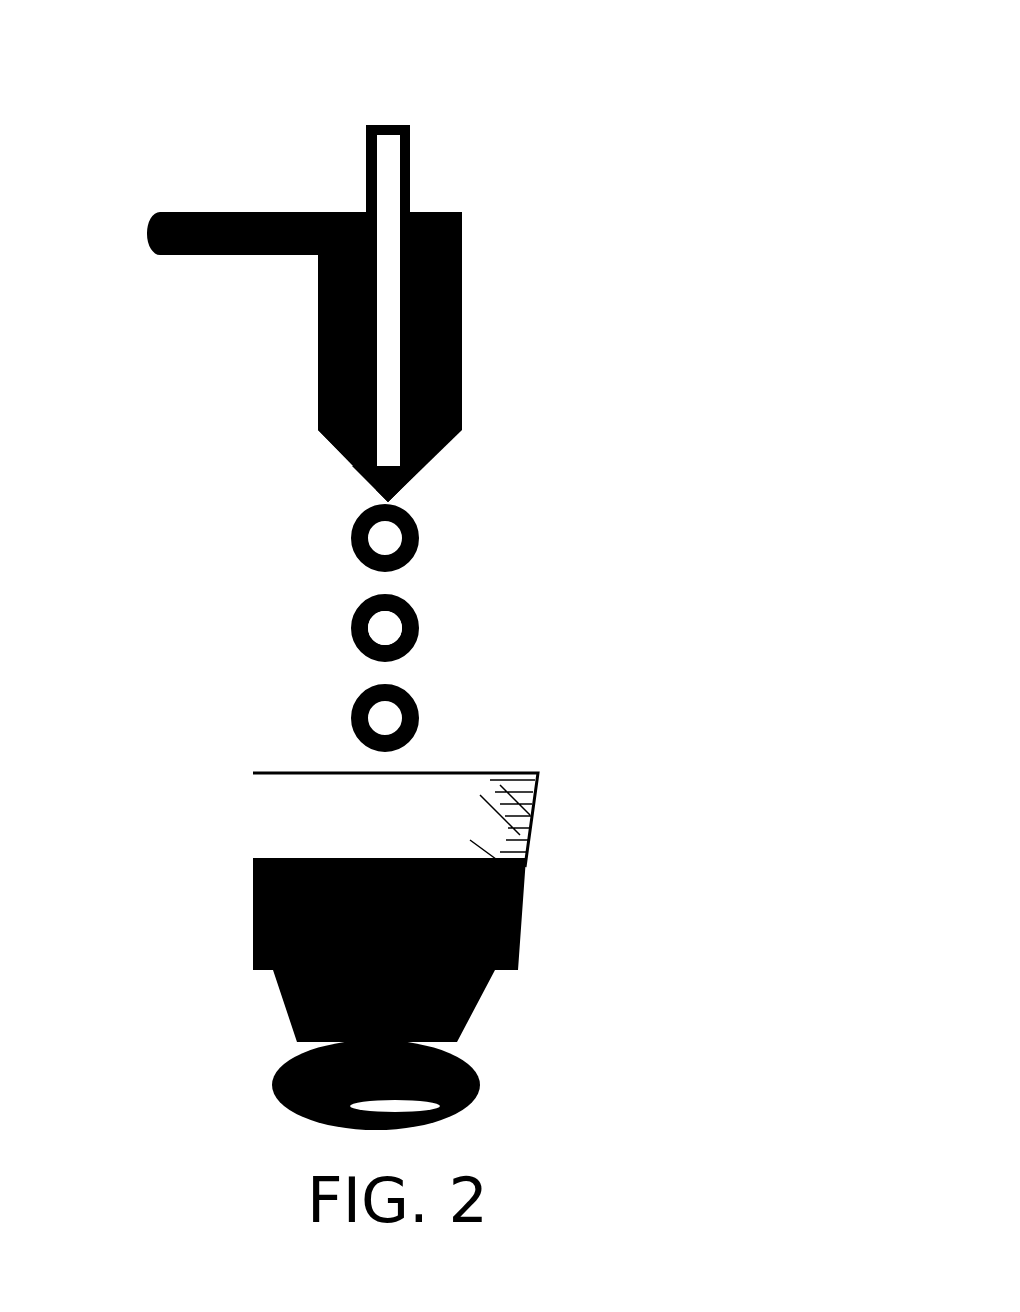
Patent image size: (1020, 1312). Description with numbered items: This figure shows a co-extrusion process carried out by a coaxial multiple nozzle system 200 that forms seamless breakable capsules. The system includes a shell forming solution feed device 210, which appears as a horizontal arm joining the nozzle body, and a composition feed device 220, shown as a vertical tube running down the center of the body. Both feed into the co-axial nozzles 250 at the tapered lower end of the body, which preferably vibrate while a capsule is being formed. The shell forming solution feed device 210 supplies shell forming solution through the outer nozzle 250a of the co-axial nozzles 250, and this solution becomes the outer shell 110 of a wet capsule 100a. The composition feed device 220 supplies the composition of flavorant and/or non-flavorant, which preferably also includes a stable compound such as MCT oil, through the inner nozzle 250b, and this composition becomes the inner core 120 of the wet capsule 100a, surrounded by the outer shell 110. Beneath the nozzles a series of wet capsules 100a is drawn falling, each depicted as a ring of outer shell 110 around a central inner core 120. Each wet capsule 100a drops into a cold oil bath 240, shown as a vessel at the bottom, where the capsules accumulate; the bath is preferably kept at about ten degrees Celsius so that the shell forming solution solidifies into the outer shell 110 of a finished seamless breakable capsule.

The coaxial multiple nozzle system 200 is at (600, 340).
The shell forming solution feed device 210 is at (176, 183).
The composition feed device 220 is at (412, 88).
The co-axial nozzles 250 is at (430, 480).
The outer nozzle 250a is at (259, 397).
The inner nozzle 250b is at (281, 475).
The wet capsule 100a is at (310, 532).
The outer shell 110 is at (415, 630).
The inner core 120 is at (388, 622).
The cold oil bath 240 is at (518, 840).